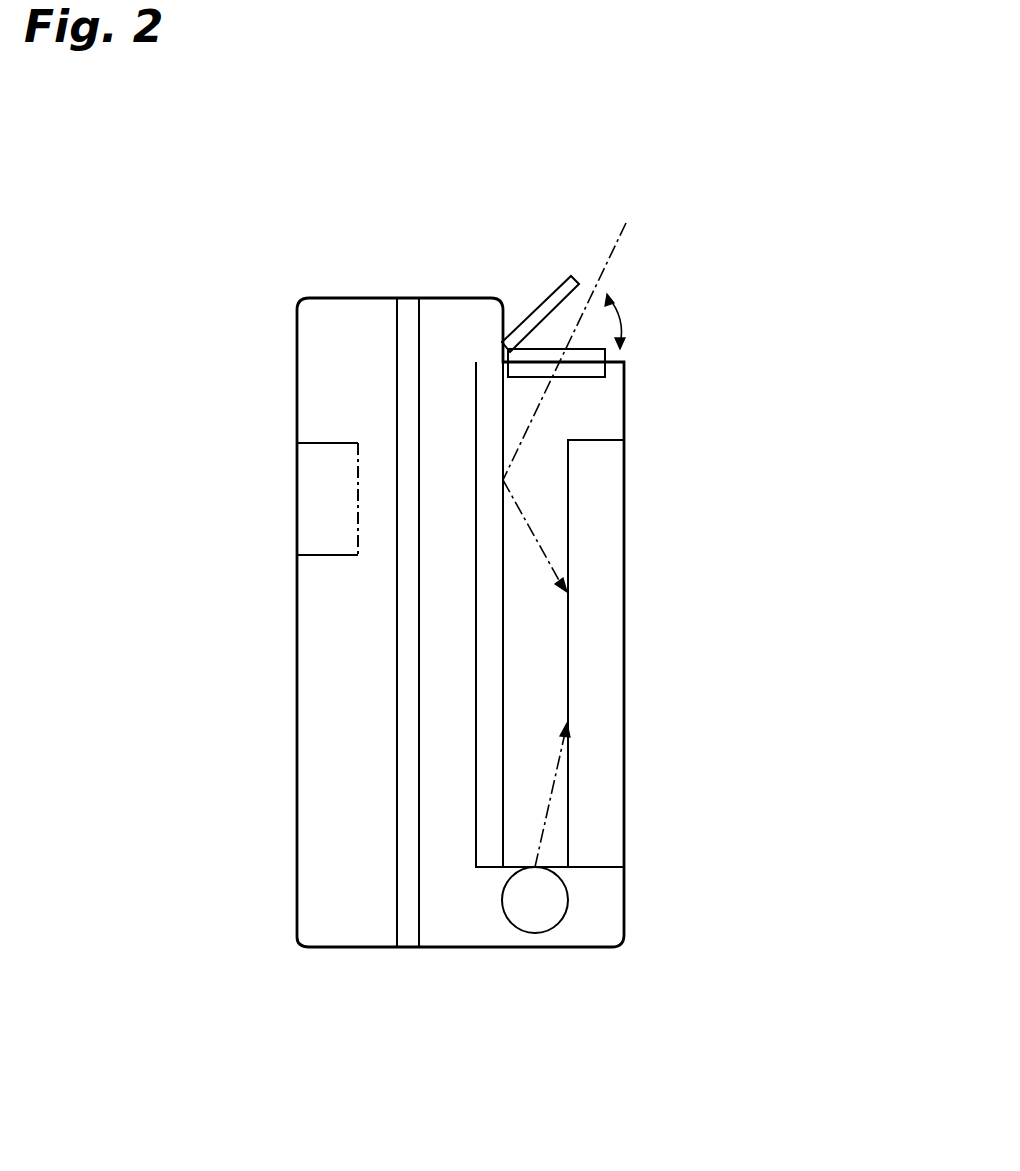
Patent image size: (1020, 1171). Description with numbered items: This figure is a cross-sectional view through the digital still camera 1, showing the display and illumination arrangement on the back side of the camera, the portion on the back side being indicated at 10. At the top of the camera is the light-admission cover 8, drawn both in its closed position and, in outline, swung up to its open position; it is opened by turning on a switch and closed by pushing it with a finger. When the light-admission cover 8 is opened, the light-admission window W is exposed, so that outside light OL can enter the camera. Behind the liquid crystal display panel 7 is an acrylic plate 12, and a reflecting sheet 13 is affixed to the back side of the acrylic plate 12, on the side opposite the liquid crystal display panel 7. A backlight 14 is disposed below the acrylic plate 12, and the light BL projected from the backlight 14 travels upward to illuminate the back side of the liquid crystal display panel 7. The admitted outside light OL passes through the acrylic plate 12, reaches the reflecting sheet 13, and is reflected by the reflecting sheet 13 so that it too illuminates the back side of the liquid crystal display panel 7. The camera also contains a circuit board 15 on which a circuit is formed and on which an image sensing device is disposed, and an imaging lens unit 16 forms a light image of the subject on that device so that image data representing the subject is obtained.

The digital still camera 1 is at (289, 222).
The liquid crystal display panel 7 is at (598, 492).
The light-admission cover 8 is at (544, 297).
The back side portion of the camera 10 is at (618, 357).
The acrylic plate 12 is at (608, 418).
The reflecting sheet 13 is at (488, 615).
The backlight 14 is at (533, 908).
The circuit board 15 is at (408, 683).
The imaging lens unit 16 is at (325, 557).
The light-admission window W is at (516, 350).
The outside light OL is at (530, 526).
The backlight light BL is at (547, 823).